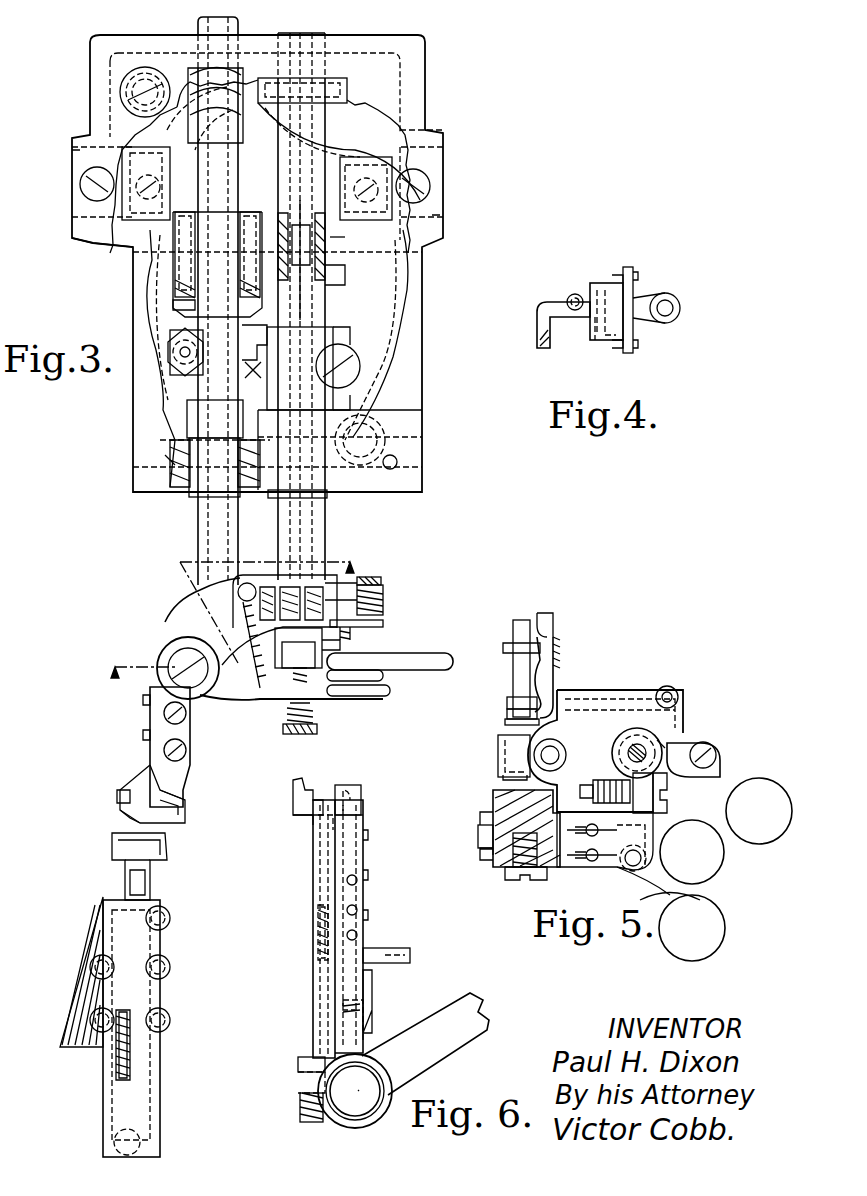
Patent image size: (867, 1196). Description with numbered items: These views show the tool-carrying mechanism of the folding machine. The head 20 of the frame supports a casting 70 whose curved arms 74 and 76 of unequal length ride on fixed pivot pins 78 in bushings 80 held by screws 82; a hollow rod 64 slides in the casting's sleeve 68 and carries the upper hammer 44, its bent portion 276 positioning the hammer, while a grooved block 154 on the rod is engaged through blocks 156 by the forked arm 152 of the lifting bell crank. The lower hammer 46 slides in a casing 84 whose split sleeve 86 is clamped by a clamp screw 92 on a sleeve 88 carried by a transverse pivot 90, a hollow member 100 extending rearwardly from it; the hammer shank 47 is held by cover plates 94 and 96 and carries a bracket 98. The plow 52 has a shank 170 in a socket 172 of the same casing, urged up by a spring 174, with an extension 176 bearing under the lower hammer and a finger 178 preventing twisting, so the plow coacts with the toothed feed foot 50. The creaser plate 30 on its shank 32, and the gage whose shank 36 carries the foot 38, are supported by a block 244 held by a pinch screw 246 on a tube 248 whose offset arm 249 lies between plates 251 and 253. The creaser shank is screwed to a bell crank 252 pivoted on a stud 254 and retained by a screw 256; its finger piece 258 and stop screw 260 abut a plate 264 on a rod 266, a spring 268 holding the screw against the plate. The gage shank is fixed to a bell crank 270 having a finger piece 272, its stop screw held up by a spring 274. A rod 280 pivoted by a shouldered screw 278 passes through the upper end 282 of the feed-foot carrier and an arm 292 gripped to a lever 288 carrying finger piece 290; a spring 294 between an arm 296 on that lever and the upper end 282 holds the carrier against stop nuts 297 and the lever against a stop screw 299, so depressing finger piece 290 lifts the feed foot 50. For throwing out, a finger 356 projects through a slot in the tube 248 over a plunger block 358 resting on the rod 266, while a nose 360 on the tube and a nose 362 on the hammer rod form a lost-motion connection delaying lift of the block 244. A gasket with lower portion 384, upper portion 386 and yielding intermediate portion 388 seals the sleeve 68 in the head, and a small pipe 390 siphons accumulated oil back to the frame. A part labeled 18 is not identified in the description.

In FIG. 3, the plate 18 is at (336, 110).
In FIG. 3, the head 20 is at (380, 47).
In FIG. 3, the creaser plate 30 is at (140, 827).
In FIG. 3, the supporting shank 32 is at (190, 743).
In FIG. 3, the gage shank 36 is at (143, 770).
In FIG. 5, the gage shank 36 is at (488, 852).
In FIG. 3, the gage foot 38 is at (130, 787).
In FIG. 3, the upper hammer 44 is at (117, 798).
In FIG. 3, the lower hammer 46 is at (150, 830).
In FIG. 4, the lower hammer 46 is at (613, 307).
In FIG. 6, the lower hammer 46 is at (350, 788).
In FIG. 6, the shank of the lower hammer 47 is at (360, 813).
In FIG. 3, the feed foot 50 is at (177, 803).
In FIG. 3, the plow 52 is at (137, 852).
In FIG. 4, the plow 52 is at (542, 328).
In FIG. 6, the plow 52 is at (307, 793).
In FIG. 3, the hollow rod 64 is at (195, 532).
In FIG. 5, the hollow rod 64 is at (563, 747).
In FIG. 3, the guide sleeve 68 is at (192, 502).
In FIG. 3, the casting 70 is at (192, 410).
In FIG. 3, the curved arm 74 is at (145, 175).
In FIG. 3, the curved arm 76 is at (245, 180).
In FIG. 3, the fixed pivot pins 78 is at (430, 150).
In FIG. 3, the bushings 80 is at (75, 150).
In FIG. 3, the screws 82 is at (88, 190).
In FIG. 3, the casing 84 is at (160, 1067).
In FIG. 4, the casing 84 is at (595, 340).
In FIG. 6, the casing 84 is at (316, 977).
In FIG. 6, the split sleeve 86 is at (330, 1122).
In FIG. 6, the sleeve 88 is at (357, 1115).
In FIG. 6, the transverse pivot 90 is at (360, 1103).
In FIG. 6, the clamp screw 92 is at (300, 1065).
In FIG. 4, the cover plate 94 is at (640, 305).
In FIG. 6, the cover plate 94 is at (364, 860).
In FIG. 6, the cover plate 96 is at (372, 993).
In FIG. 4, the bracket 98 is at (645, 318).
In FIG. 6, the bracket 98 is at (372, 957).
In FIG. 6, the hollow member 100 is at (447, 1018).
In FIG. 3, the forked arm 152 is at (175, 233).
In FIG. 3, the grooved block 154 is at (173, 275).
In FIG. 3, the blocks 156 is at (173, 300).
In FIG. 4, the plow shank 170 is at (578, 295).
In FIG. 6, the plow shank 170 is at (307, 820).
In FIG. 3, the socket 172 is at (112, 1078).
In FIG. 6, the socket 172 is at (316, 927).
In FIG. 3, the spring 174 is at (113, 1060).
In FIG. 6, the spring 174 is at (318, 908).
In FIG. 6, the extension 176 is at (337, 805).
In FIG. 6, the finger 178 is at (333, 822).
In FIG. 3, the block 244 is at (383, 590).
In FIG. 5, the block 244 is at (612, 738).
In FIG. 3, the pinch screw 246 is at (383, 623).
In FIG. 5, the pinch screw 246 is at (667, 785).
In FIG. 3, the tube 248 is at (325, 250).
In FIG. 5, the tube 248 is at (652, 740).
In FIG. 3, the offset arm 249 is at (363, 325).
In FIG. 3, the plate 251 is at (330, 237).
In FIG. 3, the bell crank 252 is at (227, 699).
In FIG. 5, the bell crank 252 is at (700, 900).
In FIG. 3, the plate 253 is at (372, 350).
In FIG. 5, the stud 254 is at (500, 795).
In FIG. 5, the screw 256 is at (520, 880).
In FIG. 3, the finger piece 258 is at (372, 696).
In FIG. 5, the finger piece 258 is at (725, 932).
In FIG. 3, the adjustable stop screw 260 is at (295, 734).
In FIG. 3, the plate 264 is at (297, 662).
In FIG. 5, the plate 264 is at (620, 837).
In FIG. 3, the rod 266 is at (325, 315).
In FIG. 5, the rod 266 is at (662, 745).
In FIG. 3, the spring 268 is at (240, 607).
In FIG. 5, the spring 268 is at (590, 835).
In FIG. 3, the bell crank 270 is at (160, 697).
In FIG. 5, the bell crank 270 is at (487, 832).
In FIG. 3, the finger piece 272 is at (373, 672).
In FIG. 5, the finger piece 272 is at (724, 880).
In FIG. 5, the spring 274 is at (590, 848).
In FIG. 3, the bent portion 276 is at (178, 600).
In FIG. 5, the bent portion 276 is at (498, 745).
In FIG. 3, the shouldered screw 278 is at (187, 623).
In FIG. 5, the shouldered screw 278 is at (530, 767).
In FIG. 3, the rod 280 is at (173, 643).
In FIG. 5, the rod 280 is at (520, 623).
In FIG. 5, the upper end of carrier 282 is at (505, 720).
In FIG. 5, the lever 288 is at (720, 760).
In FIG. 3, the finger piece 290 is at (443, 655).
In FIG. 5, the finger piece 290 is at (768, 836).
In FIG. 5, the forwardly extending arm 292 is at (548, 683).
In FIG. 5, the spring 294 is at (560, 650).
In FIG. 5, the arm 296 is at (553, 622).
In FIG. 5, the stop nuts 297 is at (510, 713).
In FIG. 3, the stop screw 299 is at (385, 583).
In FIG. 5, the stop screw 299 is at (705, 745).
In FIG. 3, the curved finger 356 is at (297, 237).
In FIG. 3, the plunger block 358 is at (322, 270).
In FIG. 3, the nose 360 is at (252, 343).
In FIG. 3, the nose 362 is at (250, 372).
In FIG. 3, the gasket lower portion 384 is at (167, 478).
In FIG. 3, the gasket upper portion 386 is at (183, 440).
In FIG. 3, the gasket intermediate portion 388 is at (175, 460).
In FIG. 3, the small pipe 390 is at (420, 453).